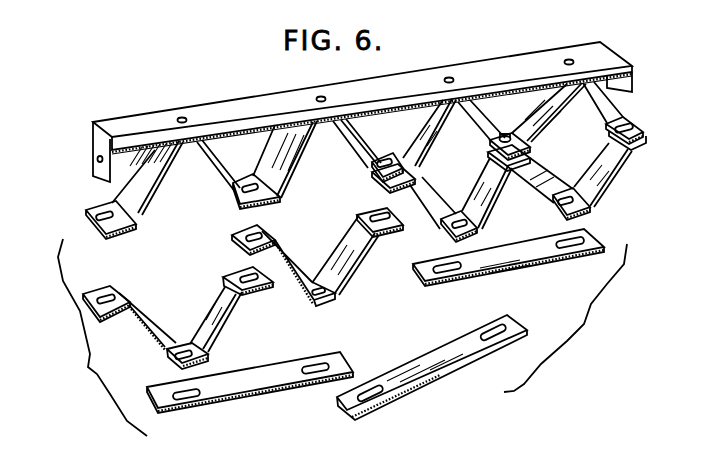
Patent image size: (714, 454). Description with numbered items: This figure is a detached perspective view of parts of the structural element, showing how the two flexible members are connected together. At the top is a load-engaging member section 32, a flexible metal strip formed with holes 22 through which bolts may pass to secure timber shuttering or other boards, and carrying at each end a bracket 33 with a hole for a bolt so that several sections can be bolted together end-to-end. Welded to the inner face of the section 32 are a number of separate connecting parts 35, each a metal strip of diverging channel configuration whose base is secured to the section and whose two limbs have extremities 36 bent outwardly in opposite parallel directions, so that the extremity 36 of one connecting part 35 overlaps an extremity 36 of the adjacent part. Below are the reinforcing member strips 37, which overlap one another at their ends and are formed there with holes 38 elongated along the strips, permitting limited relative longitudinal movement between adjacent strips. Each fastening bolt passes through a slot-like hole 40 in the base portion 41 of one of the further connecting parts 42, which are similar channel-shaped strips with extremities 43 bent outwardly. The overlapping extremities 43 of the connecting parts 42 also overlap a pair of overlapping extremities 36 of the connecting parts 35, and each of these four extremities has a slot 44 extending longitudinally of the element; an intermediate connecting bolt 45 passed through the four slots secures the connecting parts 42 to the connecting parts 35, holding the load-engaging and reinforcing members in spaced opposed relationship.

The holes 22 is at (321, 97).
The load-engaging member section 32 is at (247, 112).
The brackets 33 is at (93, 147).
The connecting parts 35 is at (150, 195).
The extremities 36 is at (262, 203).
The reinforcing member strips 37 is at (255, 377).
The holes 38 is at (368, 391).
The slot-like hole 40 is at (167, 348).
The base portion 41 is at (184, 350).
The further connecting parts 42 is at (473, 188).
The extremities 43 is at (396, 188).
The slot 44 is at (385, 160).
The intermediate connecting bolt 45 is at (506, 135).